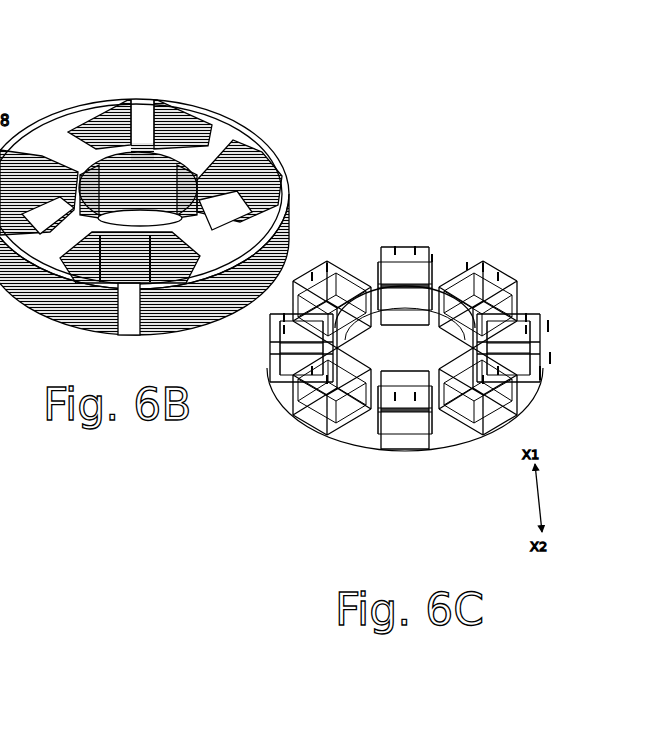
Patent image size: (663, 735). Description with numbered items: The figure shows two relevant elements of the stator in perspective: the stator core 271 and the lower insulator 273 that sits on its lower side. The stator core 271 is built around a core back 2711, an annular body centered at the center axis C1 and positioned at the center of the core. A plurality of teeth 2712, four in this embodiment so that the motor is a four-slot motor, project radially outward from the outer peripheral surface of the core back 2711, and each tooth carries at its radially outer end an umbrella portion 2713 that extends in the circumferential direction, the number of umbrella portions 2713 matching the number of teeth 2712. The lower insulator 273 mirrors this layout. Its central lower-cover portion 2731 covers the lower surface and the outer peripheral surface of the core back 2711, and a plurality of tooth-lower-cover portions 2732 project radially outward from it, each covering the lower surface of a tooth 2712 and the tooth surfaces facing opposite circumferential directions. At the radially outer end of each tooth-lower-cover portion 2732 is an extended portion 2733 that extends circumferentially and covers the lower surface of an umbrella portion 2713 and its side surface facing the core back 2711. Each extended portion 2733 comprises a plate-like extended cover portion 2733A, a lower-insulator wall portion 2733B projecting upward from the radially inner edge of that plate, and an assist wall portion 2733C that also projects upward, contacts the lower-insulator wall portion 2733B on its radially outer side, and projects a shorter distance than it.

In FIG. 6B, the stator core 271 is at (168, 196).
In FIG. 6B, the core back 2711 is at (141, 150).
In FIG. 6B, the teeth 2712 is at (200, 150).
In FIG. 6B, the umbrella portions 2713 is at (282, 158).
In FIG. 6B, the center axis C1 is at (119, 84).
In FIG. 6C, the lower insulator 273 is at (418, 332).
In FIG. 6C, the central lower-cover portion 2731 is at (344, 298).
In FIG. 6C, the tooth-lower-cover portions 2732 is at (420, 270).
In FIG. 6C, the extended portions 2733 is at (433, 258).
In FIG. 6C, the extended cover portion 2733A is at (550, 352).
In FIG. 6C, the lower-insulator wall portion 2733B is at (467, 262).
In FIG. 6C, the assist wall portion 2733C is at (548, 332).